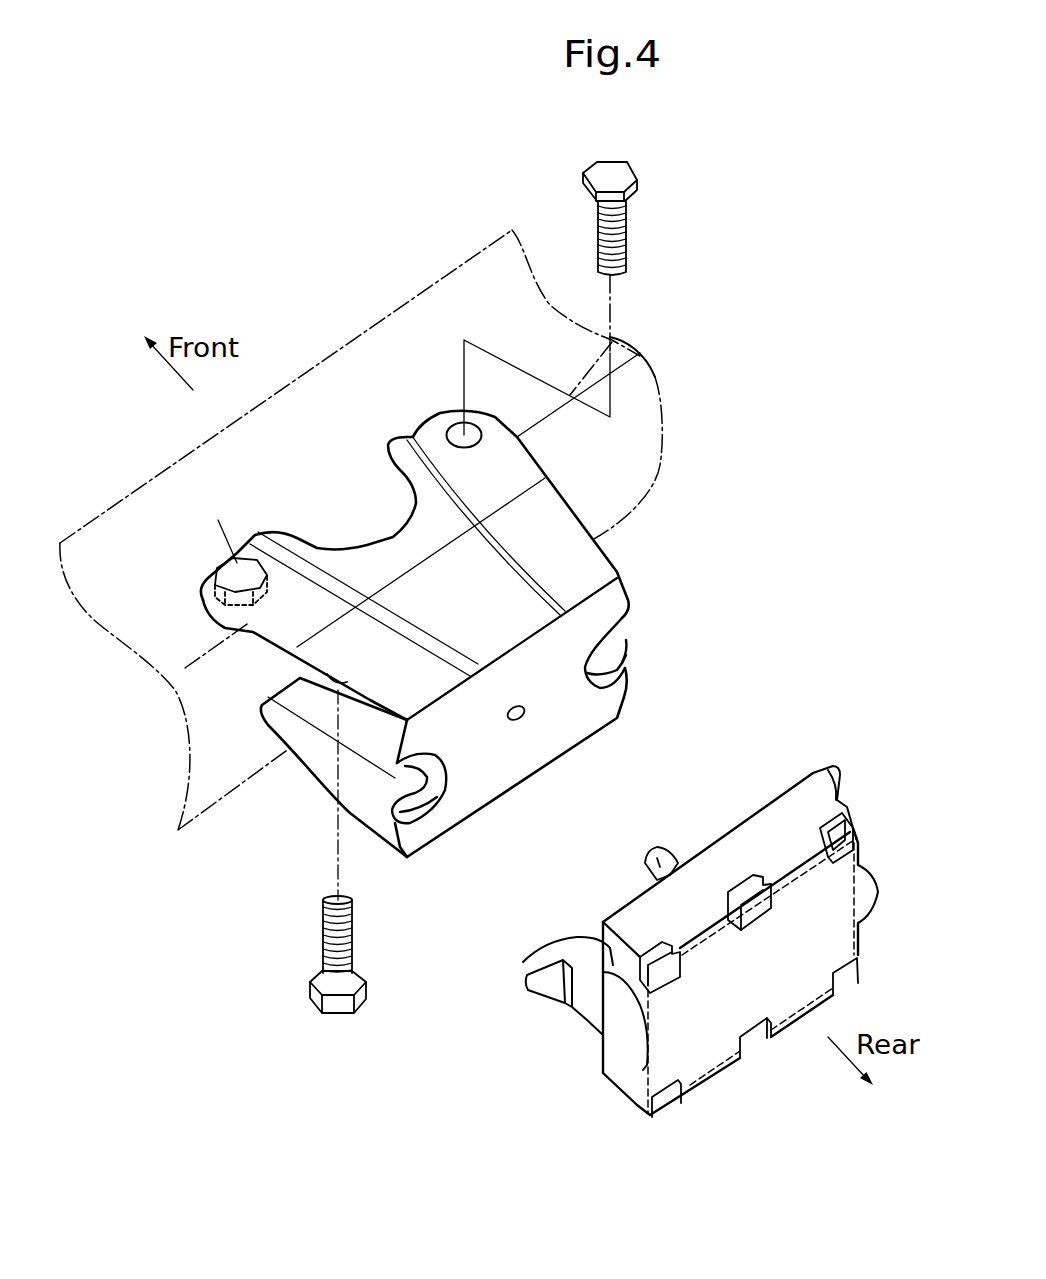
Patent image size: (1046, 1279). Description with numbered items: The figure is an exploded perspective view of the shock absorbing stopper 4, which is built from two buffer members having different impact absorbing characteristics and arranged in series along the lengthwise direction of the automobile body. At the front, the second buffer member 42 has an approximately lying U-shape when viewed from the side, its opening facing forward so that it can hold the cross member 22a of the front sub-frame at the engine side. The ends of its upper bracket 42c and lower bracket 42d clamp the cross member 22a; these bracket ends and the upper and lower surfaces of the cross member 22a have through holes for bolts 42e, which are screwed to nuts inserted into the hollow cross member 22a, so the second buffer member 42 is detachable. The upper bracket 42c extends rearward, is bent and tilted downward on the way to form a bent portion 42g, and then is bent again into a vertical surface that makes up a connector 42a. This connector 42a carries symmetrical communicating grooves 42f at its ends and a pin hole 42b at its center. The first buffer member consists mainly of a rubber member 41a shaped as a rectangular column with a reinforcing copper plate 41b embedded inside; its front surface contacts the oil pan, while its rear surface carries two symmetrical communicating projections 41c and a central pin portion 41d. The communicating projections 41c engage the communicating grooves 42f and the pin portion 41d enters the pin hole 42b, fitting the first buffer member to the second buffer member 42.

The shock absorbing stopper 4 is at (793, 526).
The cross member 22a is at (400, 307).
The rubber member 41a is at (846, 805).
The reinforcing copper plate 41b is at (762, 880).
The communicating projections 41c is at (832, 770).
The pin portion 41d is at (657, 858).
The second buffer member 42 is at (598, 466).
The connector 42a is at (605, 701).
The pin hole 42b is at (526, 717).
The upper bracket 42c is at (555, 527).
The lower bracket 42d is at (320, 758).
The bolts 42e is at (636, 180).
The communicating grooves 42f is at (625, 668).
The bent portion 42g is at (450, 540).